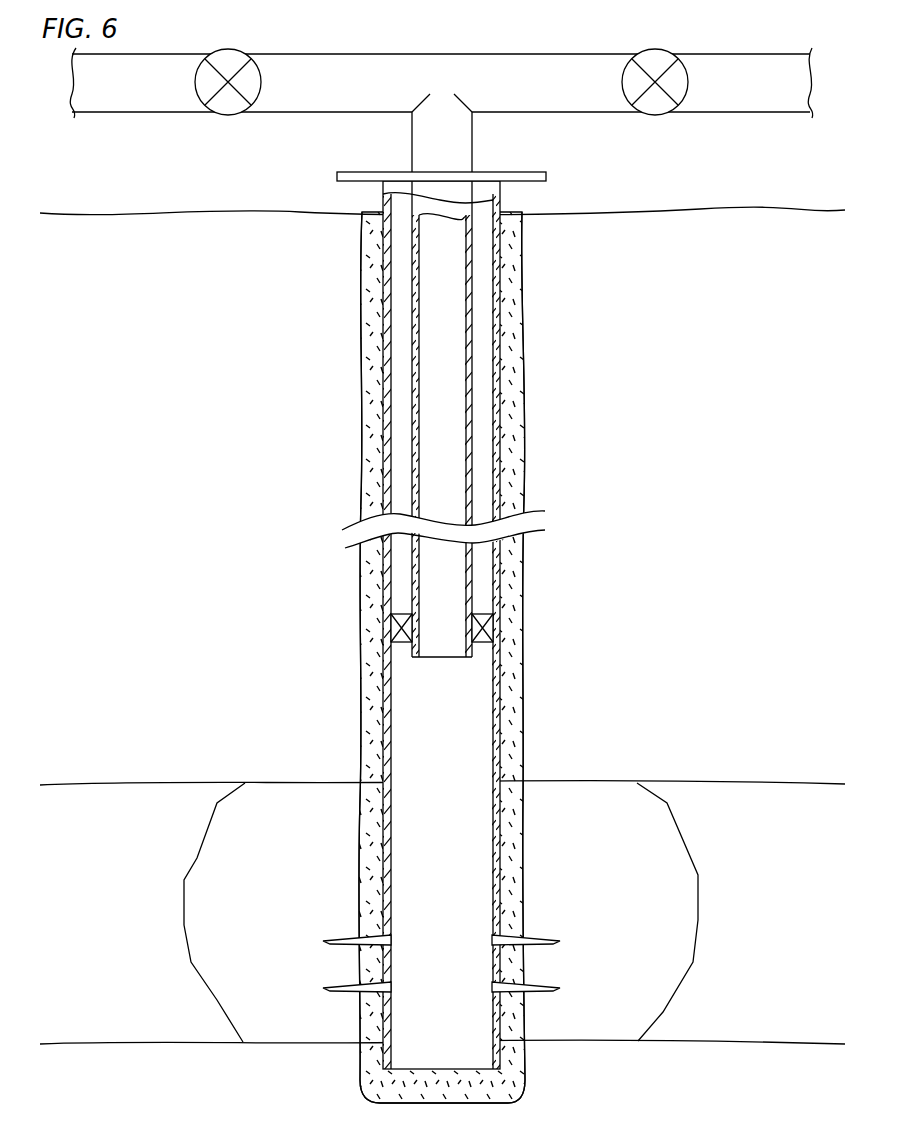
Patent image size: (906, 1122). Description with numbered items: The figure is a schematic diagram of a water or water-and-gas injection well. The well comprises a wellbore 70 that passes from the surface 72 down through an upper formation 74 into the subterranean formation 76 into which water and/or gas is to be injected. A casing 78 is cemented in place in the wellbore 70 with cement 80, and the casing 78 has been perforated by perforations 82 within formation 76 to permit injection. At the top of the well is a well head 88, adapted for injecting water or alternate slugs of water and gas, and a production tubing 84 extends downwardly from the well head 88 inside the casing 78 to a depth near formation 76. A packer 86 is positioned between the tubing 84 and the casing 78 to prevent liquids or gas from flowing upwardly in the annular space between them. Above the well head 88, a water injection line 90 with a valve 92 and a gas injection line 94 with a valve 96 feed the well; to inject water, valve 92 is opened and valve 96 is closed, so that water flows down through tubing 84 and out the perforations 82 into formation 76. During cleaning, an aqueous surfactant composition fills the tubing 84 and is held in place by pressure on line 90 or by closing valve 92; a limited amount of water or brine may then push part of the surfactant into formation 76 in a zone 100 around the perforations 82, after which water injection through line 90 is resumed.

The wellbore 70 is at (523, 293).
The earth surface 72 is at (757, 210).
The upper formation 74 is at (721, 400).
The formation 76 is at (769, 930).
The casing 78 is at (498, 383).
The cement 80 is at (513, 482).
The perforations 82 is at (325, 988).
The production tubing 84 is at (417, 413).
The packer 86 is at (490, 628).
The well head 88 is at (516, 175).
The water injection line 90 is at (306, 57).
The valve 92 is at (224, 115).
The gas injection line 94 is at (737, 55).
The valve 96 is at (657, 115).
The zone 100 is at (258, 869).